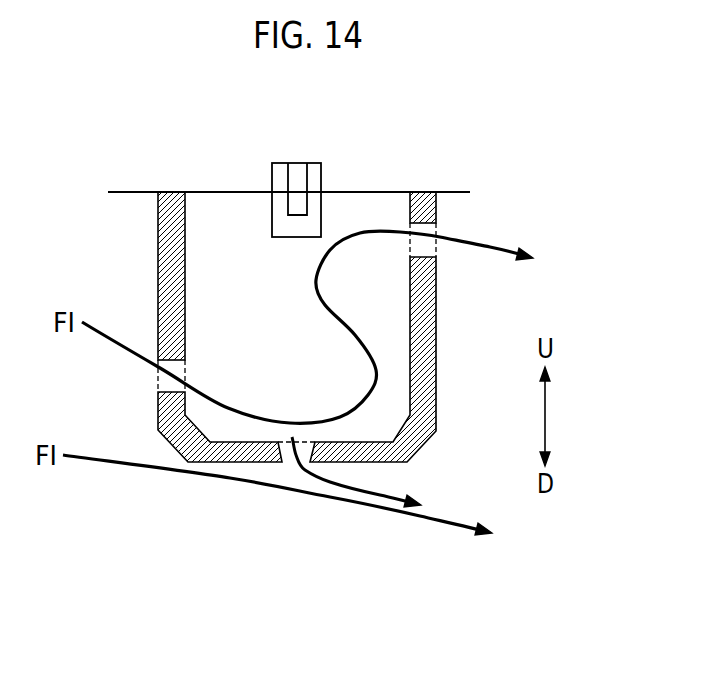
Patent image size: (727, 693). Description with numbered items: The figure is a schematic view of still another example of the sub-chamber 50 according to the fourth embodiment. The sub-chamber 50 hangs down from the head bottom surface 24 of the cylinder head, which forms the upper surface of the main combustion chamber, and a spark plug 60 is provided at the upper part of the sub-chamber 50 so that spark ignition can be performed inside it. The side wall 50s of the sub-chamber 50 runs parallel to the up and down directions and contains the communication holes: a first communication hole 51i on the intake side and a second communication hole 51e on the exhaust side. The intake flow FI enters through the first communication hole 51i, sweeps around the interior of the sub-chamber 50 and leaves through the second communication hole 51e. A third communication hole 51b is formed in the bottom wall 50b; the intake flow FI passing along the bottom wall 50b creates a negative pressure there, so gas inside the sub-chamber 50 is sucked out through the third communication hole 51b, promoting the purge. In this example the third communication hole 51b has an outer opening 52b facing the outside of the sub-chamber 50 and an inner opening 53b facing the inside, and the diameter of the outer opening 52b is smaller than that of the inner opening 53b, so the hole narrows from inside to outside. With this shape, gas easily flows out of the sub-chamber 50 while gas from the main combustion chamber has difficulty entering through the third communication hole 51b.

The head bottom surface 24 is at (139, 205).
The sub-chamber 50 is at (213, 207).
The spark plug 60 is at (321, 182).
The second communication hole 51e is at (425, 252).
The side wall 50s is at (427, 348).
The first communication hole 51i is at (163, 387).
The bottom wall 50b is at (360, 467).
The inner opening 53b is at (303, 442).
The third communication hole 51b is at (286, 460).
The outer opening 52b is at (294, 465).